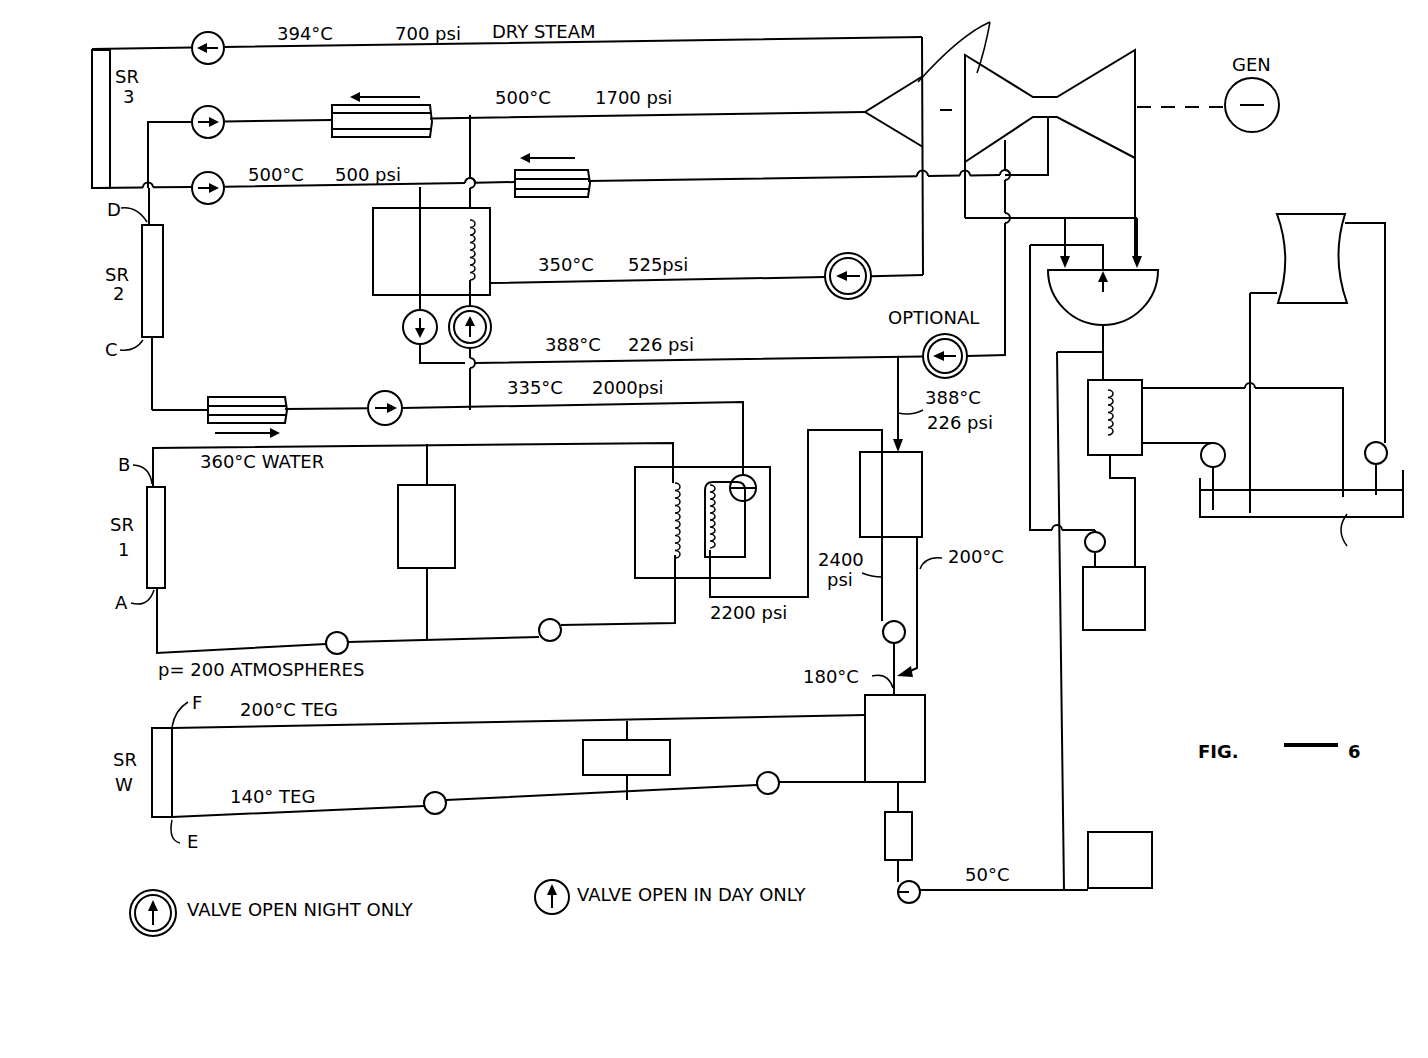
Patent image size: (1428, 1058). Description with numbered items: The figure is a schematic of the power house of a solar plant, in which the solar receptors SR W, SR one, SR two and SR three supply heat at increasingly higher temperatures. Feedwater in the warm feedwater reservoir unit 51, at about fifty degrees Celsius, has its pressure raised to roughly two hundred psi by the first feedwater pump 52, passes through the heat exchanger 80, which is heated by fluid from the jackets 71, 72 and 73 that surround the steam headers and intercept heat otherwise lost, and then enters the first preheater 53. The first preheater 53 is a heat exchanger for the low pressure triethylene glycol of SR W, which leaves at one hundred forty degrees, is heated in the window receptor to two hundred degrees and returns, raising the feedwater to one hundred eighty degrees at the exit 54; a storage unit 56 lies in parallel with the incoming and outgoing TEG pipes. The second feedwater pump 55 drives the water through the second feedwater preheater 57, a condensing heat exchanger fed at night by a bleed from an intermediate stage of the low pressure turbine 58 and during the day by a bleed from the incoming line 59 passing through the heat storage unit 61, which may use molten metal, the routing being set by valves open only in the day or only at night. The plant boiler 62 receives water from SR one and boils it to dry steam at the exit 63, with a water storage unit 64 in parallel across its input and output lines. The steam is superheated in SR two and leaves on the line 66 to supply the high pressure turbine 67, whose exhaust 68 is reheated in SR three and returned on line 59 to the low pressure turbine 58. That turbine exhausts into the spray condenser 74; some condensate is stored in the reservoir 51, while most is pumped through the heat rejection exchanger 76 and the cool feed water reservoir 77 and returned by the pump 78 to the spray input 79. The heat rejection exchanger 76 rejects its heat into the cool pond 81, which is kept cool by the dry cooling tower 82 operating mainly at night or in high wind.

The warm feedwater reservoir unit 51 is at (1128, 842).
The first feedwater pump 52 is at (915, 903).
The first preheater 53 is at (925, 773).
The exit 54 is at (898, 687).
The second feedwater pump 55 is at (882, 640).
The storage unit 56 is at (583, 758).
The second feedwater preheater 57 is at (915, 521).
The low pressure turbine 58 is at (1033, 98).
The incoming line 59 is at (232, 192).
The heat storage unit 61 is at (382, 297).
The plant boiler 62 is at (640, 480).
The exit 63 is at (742, 448).
The water storage unit 64 is at (442, 570).
The line 66 is at (243, 121).
The high pressure turbine 67 is at (897, 91).
The exhaust 68 is at (801, 37).
The jacket 71 is at (420, 104).
The jacket 72 is at (582, 170).
The jacket 73 is at (218, 396).
The spray condenser 74 is at (1135, 302).
The heat rejection exchanger 76 is at (1130, 384).
The cool feed water reservoir 77 is at (1125, 620).
The pump 78 is at (1106, 530).
The spray input 79 is at (1105, 257).
The heat exchanger 80 is at (907, 837).
The cool pond 81 is at (1267, 512).
The dry cooling tower 82 is at (1297, 238).